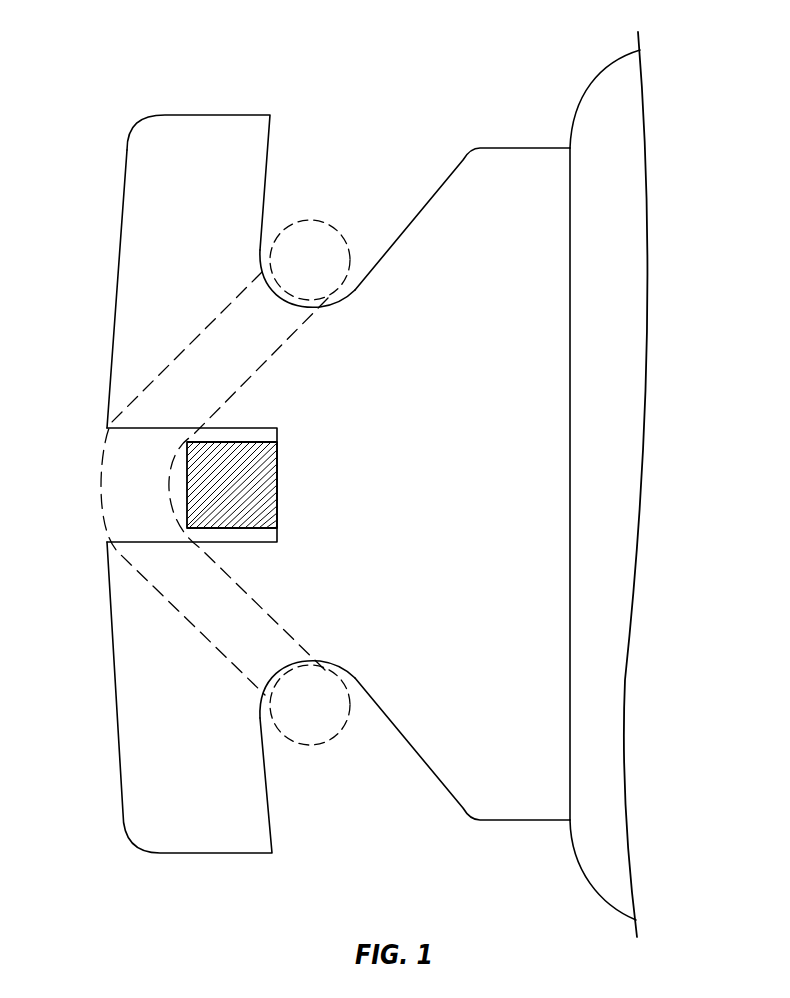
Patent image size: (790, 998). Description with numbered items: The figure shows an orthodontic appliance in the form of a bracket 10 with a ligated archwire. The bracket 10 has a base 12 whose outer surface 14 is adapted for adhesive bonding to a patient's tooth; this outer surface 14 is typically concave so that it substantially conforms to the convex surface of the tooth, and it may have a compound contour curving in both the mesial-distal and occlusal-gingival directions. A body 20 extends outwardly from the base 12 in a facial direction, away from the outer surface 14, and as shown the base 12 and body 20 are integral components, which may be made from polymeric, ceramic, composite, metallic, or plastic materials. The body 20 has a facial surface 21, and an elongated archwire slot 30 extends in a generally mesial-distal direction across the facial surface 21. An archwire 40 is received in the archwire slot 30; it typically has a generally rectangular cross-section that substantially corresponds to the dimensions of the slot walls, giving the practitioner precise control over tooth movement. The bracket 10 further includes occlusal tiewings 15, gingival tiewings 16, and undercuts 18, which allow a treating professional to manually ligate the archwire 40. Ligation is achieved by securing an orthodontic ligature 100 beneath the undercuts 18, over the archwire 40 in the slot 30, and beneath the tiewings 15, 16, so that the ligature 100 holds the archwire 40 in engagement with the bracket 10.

The bracket 10 is at (330, 578).
The base 12 is at (613, 117).
The outer surface 14 is at (652, 412).
The occlusal tiewings 15 is at (167, 173).
The gingival tiewings 16 is at (177, 787).
The undercuts 18 is at (263, 210).
The body 20 is at (467, 233).
The facial surface 21 is at (113, 242).
The archwire slot 30 is at (243, 430).
The archwire 40 is at (213, 485).
The orthodontic ligature 100 is at (335, 192).